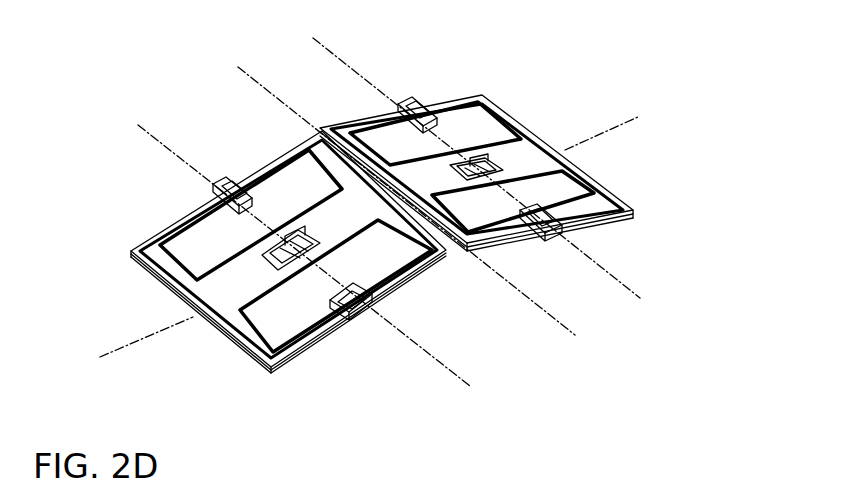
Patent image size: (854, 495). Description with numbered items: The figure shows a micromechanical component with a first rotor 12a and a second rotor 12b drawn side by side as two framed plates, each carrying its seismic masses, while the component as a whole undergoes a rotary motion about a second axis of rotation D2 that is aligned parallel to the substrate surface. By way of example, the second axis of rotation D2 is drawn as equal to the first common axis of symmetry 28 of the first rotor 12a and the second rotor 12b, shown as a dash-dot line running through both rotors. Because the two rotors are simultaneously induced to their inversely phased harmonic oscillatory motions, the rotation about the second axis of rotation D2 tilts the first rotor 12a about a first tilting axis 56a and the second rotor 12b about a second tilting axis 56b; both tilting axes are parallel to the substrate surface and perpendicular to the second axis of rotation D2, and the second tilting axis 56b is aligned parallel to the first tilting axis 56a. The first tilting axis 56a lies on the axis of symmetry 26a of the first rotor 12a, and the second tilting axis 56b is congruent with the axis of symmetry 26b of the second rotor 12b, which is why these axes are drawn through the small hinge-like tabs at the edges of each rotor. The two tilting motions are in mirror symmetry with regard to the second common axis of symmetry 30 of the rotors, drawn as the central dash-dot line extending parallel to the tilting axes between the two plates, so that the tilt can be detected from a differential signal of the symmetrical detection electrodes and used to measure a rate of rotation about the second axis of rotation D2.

The first rotor 12a is at (341, 264).
The second rotor 12b is at (536, 169).
The axis of symmetry of first rotor 26a is at (467, 383).
The axis of symmetry of second rotor 26b is at (627, 283).
The first tilting axis 56a is at (369, 264).
The second tilting axis 56b is at (536, 169).
The first common axis of symmetry 28 is at (396, 189).
The second axis of rotation D2 is at (635, 117).
The second common axis of symmetry 30 is at (568, 328).